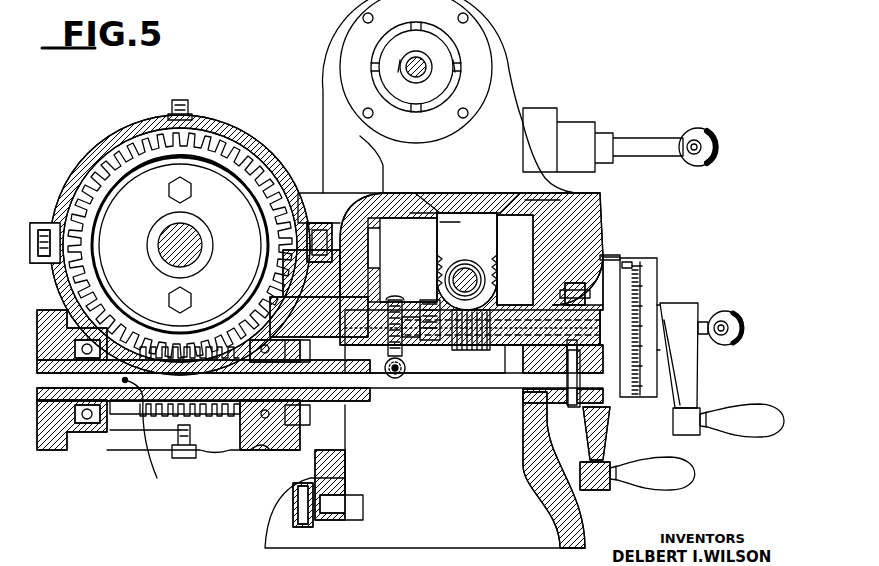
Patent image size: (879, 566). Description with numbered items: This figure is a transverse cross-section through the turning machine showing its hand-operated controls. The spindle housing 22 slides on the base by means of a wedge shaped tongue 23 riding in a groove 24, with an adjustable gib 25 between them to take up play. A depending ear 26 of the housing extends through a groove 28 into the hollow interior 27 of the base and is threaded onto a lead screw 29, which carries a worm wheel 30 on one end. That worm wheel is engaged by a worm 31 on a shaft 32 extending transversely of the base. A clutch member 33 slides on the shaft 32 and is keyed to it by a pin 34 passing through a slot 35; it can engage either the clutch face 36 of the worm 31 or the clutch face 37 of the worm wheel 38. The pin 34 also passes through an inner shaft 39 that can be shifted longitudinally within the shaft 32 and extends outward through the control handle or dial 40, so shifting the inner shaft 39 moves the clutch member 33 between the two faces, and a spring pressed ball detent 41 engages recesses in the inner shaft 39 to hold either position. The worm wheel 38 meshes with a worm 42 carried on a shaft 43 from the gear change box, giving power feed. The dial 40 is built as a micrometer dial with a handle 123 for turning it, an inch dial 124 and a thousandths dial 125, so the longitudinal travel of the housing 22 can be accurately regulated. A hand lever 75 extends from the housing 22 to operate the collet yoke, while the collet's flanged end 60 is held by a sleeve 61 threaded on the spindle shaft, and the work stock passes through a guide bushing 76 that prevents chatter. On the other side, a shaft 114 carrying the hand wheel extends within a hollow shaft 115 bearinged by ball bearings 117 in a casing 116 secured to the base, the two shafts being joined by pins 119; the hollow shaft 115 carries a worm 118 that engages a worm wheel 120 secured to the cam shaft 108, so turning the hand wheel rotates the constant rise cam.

The spindle housing 22 is at (507, 49).
The wedge shaped tongue 23 is at (420, 213).
The groove 24 is at (438, 196).
The adjustable gib 25 is at (530, 199).
The ear 26 is at (440, 250).
The hollow interior 27 is at (557, 259).
The groove 28 is at (442, 225).
The lead screw 29 is at (468, 276).
The worm wheel 30 is at (492, 272).
The worm 31 is at (432, 352).
The shaft 32 is at (400, 374).
The clutch member 33 is at (432, 372).
The pin 34 is at (418, 377).
The slot 35 is at (436, 300).
The clutch face 36 is at (462, 352).
The clutch face 37 is at (418, 325).
The worm wheel 38 is at (389, 300).
The inner shaft 39 is at (708, 318).
The control handle or dial 40 is at (655, 282).
The spring pressed ball detent 41 is at (585, 296).
The worm 42 is at (392, 380).
The shaft 43 is at (392, 382).
The flanged end 60 is at (399, 66).
The sleeve 61 is at (452, 72).
The hand lever 75 is at (636, 138).
The guide bushing 76 is at (418, 58).
The cam shaft 108 is at (190, 255).
The shaft 114 is at (482, 388).
The hollow shaft 115 is at (117, 432).
The casing 116 is at (72, 452).
The ball bearings 117 is at (90, 427).
The worm 118 is at (205, 432).
The pins 119 is at (612, 498).
The worm wheel 120 is at (245, 163).
The handle 123 is at (749, 431).
The dial 124 is at (628, 258).
The dial 125 is at (651, 262).